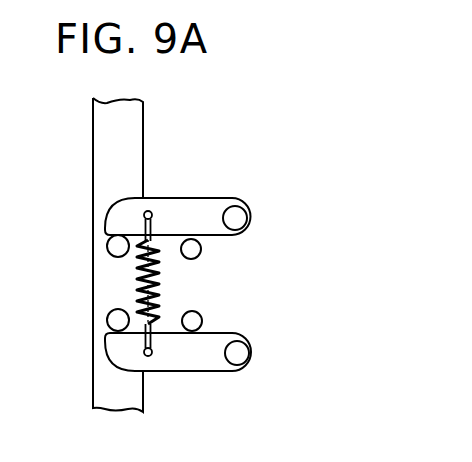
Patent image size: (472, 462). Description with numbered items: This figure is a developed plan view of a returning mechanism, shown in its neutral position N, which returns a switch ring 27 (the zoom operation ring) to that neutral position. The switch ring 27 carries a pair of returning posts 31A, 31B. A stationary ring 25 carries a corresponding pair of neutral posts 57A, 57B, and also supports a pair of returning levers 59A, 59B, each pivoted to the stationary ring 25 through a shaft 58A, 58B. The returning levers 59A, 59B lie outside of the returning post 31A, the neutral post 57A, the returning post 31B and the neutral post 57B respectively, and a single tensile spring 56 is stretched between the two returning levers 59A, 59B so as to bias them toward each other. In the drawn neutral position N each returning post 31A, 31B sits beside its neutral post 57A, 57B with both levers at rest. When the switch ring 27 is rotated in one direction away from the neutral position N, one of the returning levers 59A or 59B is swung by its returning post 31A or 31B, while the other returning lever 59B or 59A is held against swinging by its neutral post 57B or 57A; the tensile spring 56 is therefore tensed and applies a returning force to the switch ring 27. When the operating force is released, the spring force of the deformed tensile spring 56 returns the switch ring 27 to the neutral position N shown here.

The switch ring 27 is at (108, 157).
The returning lever 59A is at (192, 210).
The returning lever 59B is at (188, 371).
The shaft 58A is at (242, 203).
The shaft 58B is at (240, 370).
The stationary ring 25 is at (292, 289).
The returning post 31A is at (110, 254).
The returning post 31B is at (112, 328).
The neutral post 57A is at (201, 252).
The neutral post 57B is at (202, 320).
The tensile spring 56 is at (162, 290).
The neutral position N is at (118, 246).